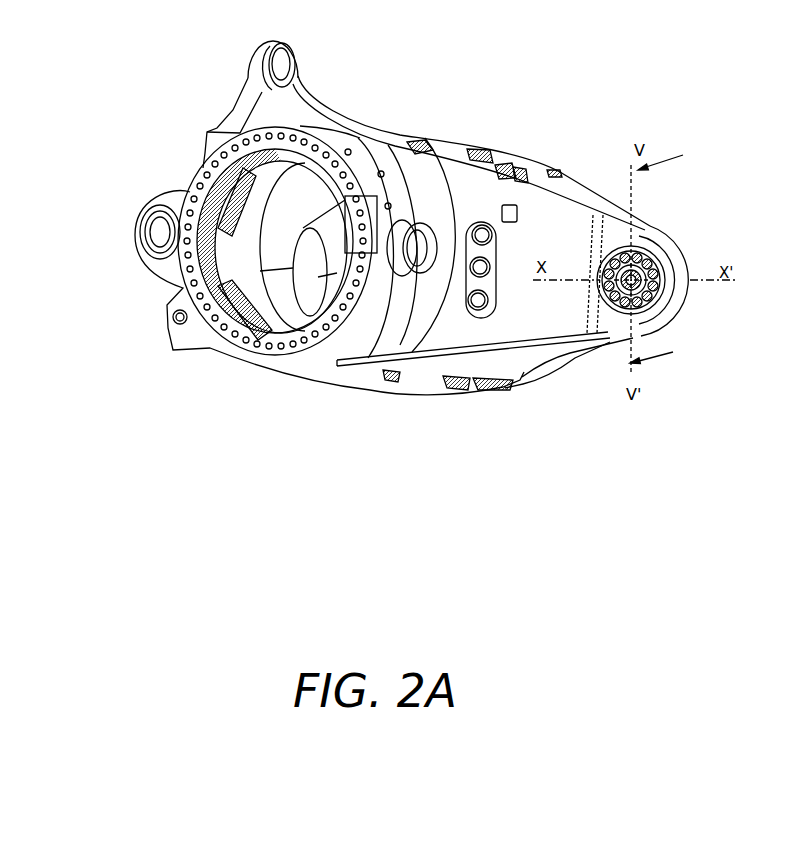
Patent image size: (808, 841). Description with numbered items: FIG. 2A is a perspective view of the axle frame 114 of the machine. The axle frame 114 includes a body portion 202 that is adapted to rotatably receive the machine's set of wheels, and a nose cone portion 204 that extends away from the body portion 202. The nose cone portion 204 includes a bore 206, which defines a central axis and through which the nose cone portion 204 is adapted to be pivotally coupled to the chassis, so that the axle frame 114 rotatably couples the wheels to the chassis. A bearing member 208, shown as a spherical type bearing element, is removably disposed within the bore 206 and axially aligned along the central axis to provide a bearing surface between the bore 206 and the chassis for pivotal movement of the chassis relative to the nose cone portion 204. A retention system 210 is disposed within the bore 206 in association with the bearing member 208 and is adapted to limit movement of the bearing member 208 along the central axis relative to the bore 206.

The axle frame 114 is at (540, 108).
The body portion 202 is at (372, 316).
The nose cone portion 204 is at (672, 220).
The bore 206 is at (673, 268).
The bearing member 208 is at (644, 288).
The retention system 210 is at (640, 236).